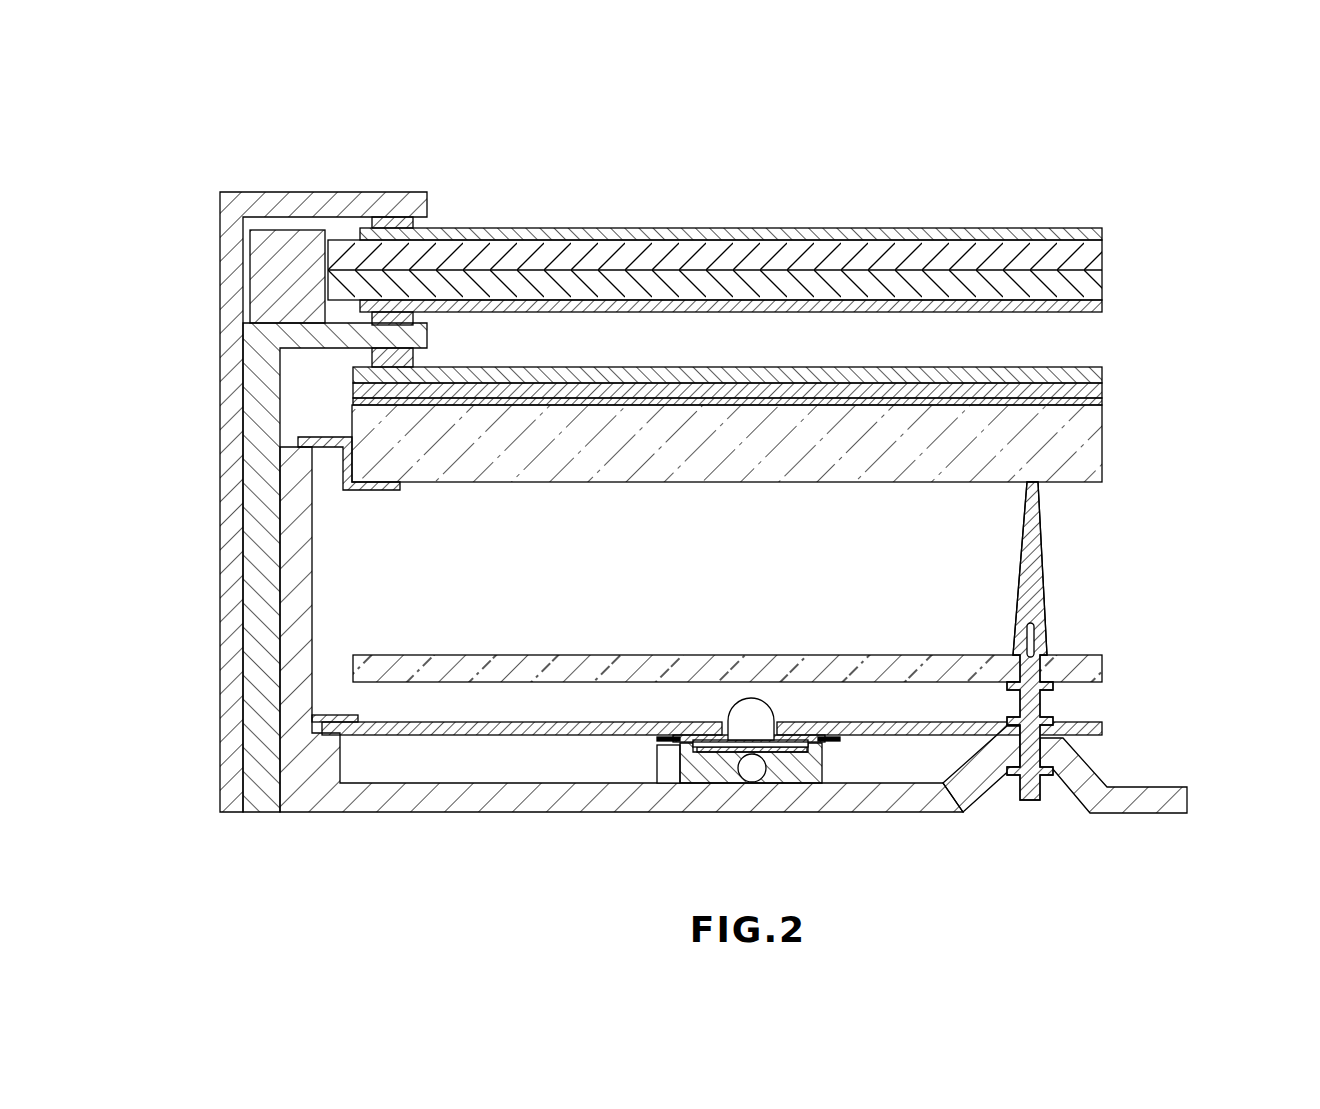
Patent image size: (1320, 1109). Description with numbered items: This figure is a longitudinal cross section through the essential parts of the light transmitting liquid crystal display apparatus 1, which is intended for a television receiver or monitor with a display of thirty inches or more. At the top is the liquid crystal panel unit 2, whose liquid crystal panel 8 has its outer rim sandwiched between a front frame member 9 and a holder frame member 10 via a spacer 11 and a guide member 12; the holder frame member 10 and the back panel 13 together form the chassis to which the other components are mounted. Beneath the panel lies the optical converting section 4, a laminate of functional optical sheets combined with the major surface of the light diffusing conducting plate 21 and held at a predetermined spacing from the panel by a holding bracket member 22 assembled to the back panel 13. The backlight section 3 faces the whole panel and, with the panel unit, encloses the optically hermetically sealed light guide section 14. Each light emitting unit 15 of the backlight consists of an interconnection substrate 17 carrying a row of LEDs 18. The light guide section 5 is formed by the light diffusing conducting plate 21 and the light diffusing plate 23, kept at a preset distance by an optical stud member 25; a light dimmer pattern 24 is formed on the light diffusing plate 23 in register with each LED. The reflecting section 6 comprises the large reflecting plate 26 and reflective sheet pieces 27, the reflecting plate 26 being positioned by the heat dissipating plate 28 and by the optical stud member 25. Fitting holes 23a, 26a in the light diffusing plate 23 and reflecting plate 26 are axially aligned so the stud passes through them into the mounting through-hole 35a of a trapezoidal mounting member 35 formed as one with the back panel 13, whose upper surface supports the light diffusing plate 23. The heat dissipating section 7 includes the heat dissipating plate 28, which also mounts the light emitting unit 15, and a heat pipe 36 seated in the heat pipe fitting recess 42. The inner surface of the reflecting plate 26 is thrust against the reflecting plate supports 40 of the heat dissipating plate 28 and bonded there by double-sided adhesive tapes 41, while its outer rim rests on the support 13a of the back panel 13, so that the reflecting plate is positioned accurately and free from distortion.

The liquid crystal display apparatus 1 is at (684, 170).
The liquid crystal panel unit 2 is at (1128, 284).
The backlight section 3 is at (645, 764).
The optical converting section 4 is at (1105, 363).
The light guide section 5 is at (1126, 524).
The reflecting section 6 is at (1146, 684).
The heat dissipating section 7 is at (832, 772).
The liquid crystal panel 8 is at (753, 255).
The front frame member 9 is at (232, 522).
The holder frame member 10 is at (262, 678).
The spacer 11 is at (392, 220).
The guide member 12 is at (282, 238).
The back panel 13 is at (438, 796).
The support 13a is at (323, 736).
The light guide section 14 is at (418, 607).
The light emitting unit 15 is at (774, 742).
The interconnection substrate 17 is at (806, 745).
The LED 18 is at (746, 716).
The light diffusing conducting plate 21 is at (1085, 447).
The holding bracket member 22 is at (372, 492).
The light diffusing plate 23 is at (1075, 662).
The fitting hole 23a is at (1012, 642).
The light dimmer pattern 24 is at (784, 702).
The optical stud member 25 is at (1043, 585).
The reflecting plate 26 is at (1087, 730).
The fitting hole 26a is at (1042, 758).
The reflective sheet piece 27 is at (698, 742).
The heat dissipating plate 28 is at (814, 784).
The mounting member 35 is at (973, 776).
The mounting through-hole 35a is at (1040, 800).
The heat pipe 36 is at (752, 774).
The reflecting plate support 40 is at (658, 774).
The double-sided adhesive tape 41 is at (668, 736).
The heat pipe fitting recess 42 is at (756, 780).